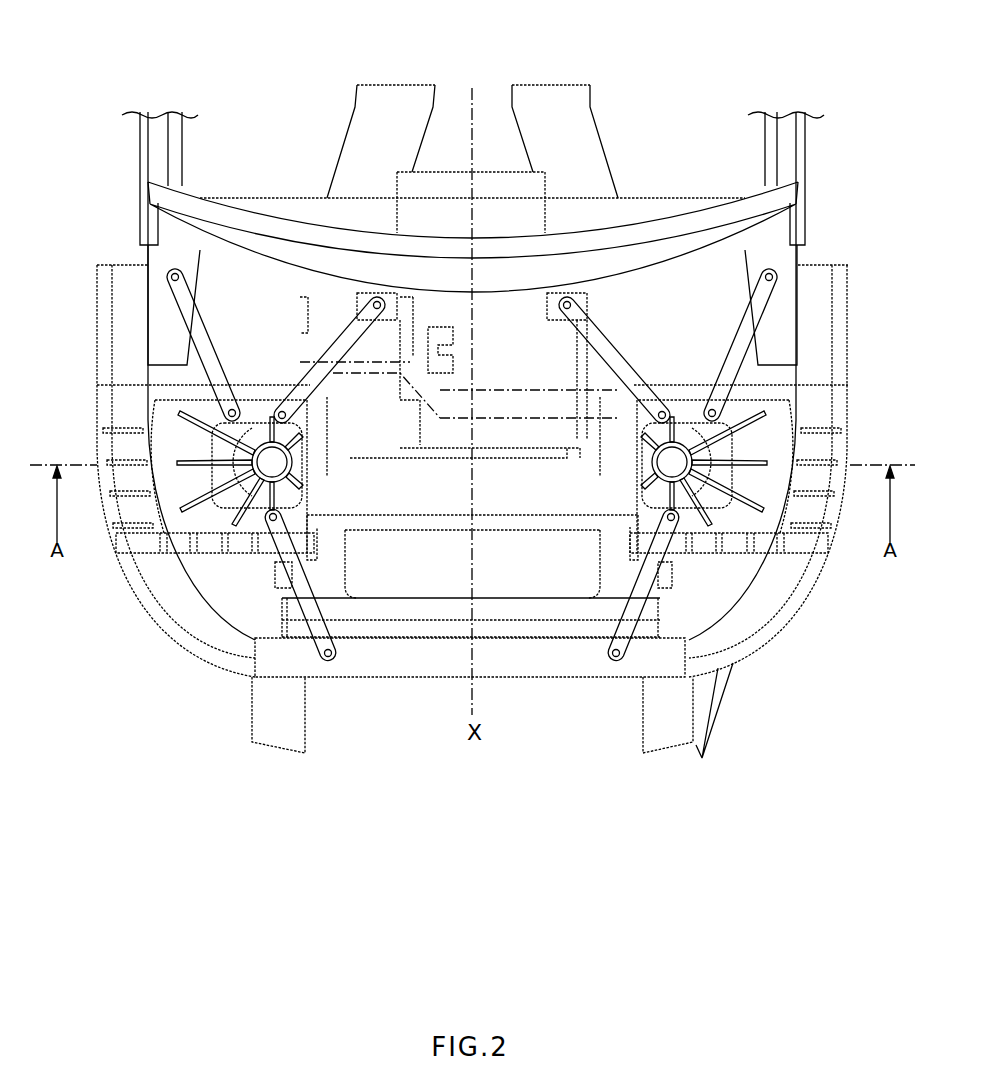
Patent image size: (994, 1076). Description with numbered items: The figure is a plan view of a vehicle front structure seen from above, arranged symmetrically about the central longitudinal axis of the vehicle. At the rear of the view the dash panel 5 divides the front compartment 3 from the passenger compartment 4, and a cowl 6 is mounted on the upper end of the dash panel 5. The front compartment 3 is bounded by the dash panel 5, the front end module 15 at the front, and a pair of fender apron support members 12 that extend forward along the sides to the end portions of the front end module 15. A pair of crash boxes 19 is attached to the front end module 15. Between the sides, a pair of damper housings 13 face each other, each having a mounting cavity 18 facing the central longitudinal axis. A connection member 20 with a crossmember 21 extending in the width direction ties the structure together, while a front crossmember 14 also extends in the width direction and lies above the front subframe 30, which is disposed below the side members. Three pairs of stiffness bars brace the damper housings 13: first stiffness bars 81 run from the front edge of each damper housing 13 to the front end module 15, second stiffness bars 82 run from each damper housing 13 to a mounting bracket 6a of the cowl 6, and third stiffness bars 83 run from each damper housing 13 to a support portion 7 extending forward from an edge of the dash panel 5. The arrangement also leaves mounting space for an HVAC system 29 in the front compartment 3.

The front compartment 3 is at (509, 370).
The passenger compartment 4 is at (498, 108).
The dash panel 5 is at (250, 285).
The cowl 6 is at (698, 222).
The mounting bracket 6a is at (397, 300).
The support portion 7 is at (157, 257).
The fender apron support member 12 is at (128, 573).
The damper housing 13 is at (240, 493).
The front crossmember 14 is at (555, 527).
The front end module 15 is at (342, 688).
The mounting cavity 18 is at (323, 478).
The crash box 19 is at (260, 720).
The connection member 20 is at (446, 516).
The crossmember 21 is at (368, 500).
The HVAC system 29 is at (447, 450).
The front subframe 30 is at (535, 622).
The first stiffness bar 81 is at (293, 572).
The second stiffness bar 82 is at (307, 378).
The third stiffness bar 83 is at (177, 312).